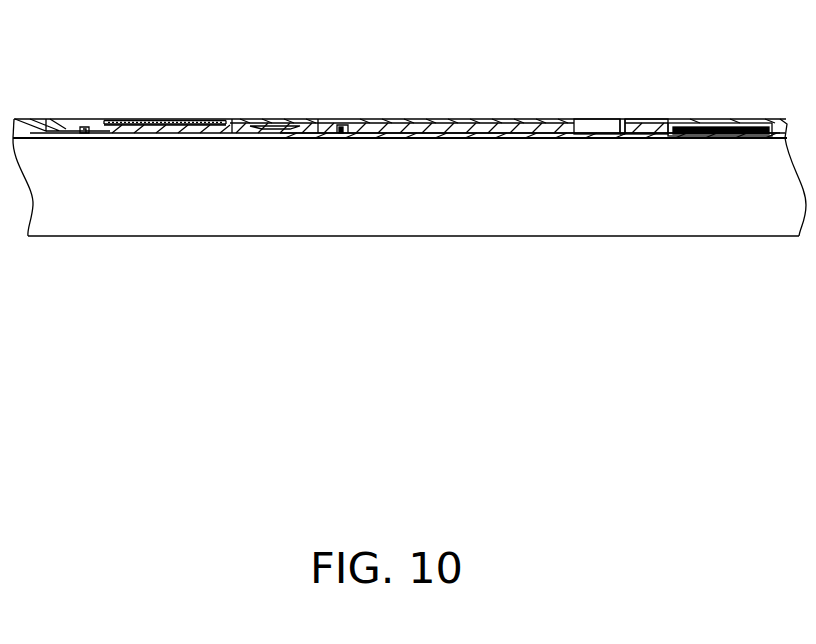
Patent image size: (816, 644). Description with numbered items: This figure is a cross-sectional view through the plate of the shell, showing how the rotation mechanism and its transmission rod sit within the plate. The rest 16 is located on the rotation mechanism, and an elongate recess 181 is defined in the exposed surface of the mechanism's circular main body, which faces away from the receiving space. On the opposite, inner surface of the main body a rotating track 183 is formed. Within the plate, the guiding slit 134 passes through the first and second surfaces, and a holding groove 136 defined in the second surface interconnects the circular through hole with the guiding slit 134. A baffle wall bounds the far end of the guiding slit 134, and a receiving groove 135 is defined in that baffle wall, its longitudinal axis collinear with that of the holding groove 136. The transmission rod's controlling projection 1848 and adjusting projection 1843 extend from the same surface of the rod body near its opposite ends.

The rest 16 is at (136, 119).
The elongate recess 181 is at (301, 119).
The rotating track 183 is at (85, 138).
The adjusting projection 1843 is at (342, 138).
The controlling projection 1848 is at (622, 119).
The guiding slit 134 is at (597, 119).
The receiving groove 135 is at (671, 122).
The holding groove 136 is at (455, 138).